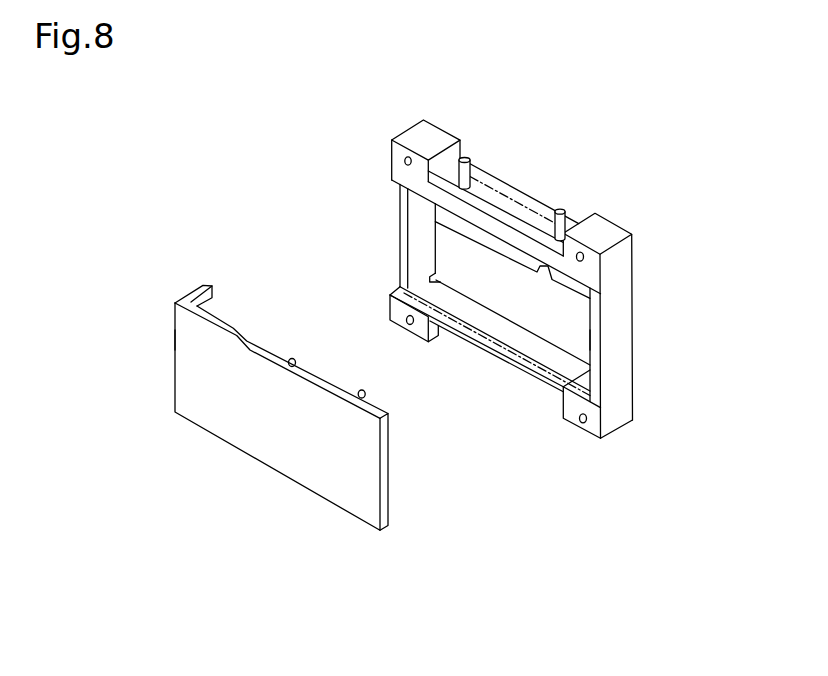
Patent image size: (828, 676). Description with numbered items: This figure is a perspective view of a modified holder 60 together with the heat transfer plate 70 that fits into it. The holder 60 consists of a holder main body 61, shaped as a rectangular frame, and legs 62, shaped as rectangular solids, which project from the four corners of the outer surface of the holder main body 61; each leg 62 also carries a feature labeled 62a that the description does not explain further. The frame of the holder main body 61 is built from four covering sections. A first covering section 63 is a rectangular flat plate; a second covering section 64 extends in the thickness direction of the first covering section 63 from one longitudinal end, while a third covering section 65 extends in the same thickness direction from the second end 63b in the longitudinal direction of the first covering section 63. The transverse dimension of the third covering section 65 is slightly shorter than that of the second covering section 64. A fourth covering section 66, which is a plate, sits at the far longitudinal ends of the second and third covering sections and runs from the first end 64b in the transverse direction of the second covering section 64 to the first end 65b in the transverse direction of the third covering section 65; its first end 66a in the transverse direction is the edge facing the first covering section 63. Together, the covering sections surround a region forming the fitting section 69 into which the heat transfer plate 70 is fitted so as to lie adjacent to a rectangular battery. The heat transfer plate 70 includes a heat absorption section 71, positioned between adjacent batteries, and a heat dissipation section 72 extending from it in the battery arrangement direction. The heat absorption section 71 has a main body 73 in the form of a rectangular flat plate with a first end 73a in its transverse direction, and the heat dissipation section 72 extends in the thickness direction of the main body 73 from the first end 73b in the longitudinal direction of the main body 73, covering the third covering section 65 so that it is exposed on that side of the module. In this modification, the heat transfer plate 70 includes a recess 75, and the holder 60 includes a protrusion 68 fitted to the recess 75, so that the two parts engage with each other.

The holder 60 is at (501, 134).
The holder main body 61 is at (635, 304).
The legs 62 is at (393, 148).
The hole 62a is at (411, 159).
The first covering section 63 is at (522, 348).
The second end in the longitudinal direction of the first covering section 63b is at (441, 279).
The second covering section 64 is at (622, 349).
The first end in the transverse direction of the second covering section 64b is at (591, 330).
The third covering section 65 is at (411, 203).
The first end in the transverse direction of the third covering section 65b is at (404, 254).
The fourth covering section 66 is at (500, 236).
The first end in the transverse direction of the fourth covering section 66a is at (435, 209).
The protrusion 68 is at (516, 254).
The fitting section 69 is at (473, 305).
The heat transfer plate 70 is at (146, 249).
The heat absorption section 71 is at (293, 480).
The heat dissipation section 72 is at (208, 284).
The main body 73 is at (243, 438).
The first end in the transverse direction of the main body 73a is at (360, 402).
The first end in the longitudinal direction of the main body 73b is at (175, 340).
The recess 75 is at (291, 370).